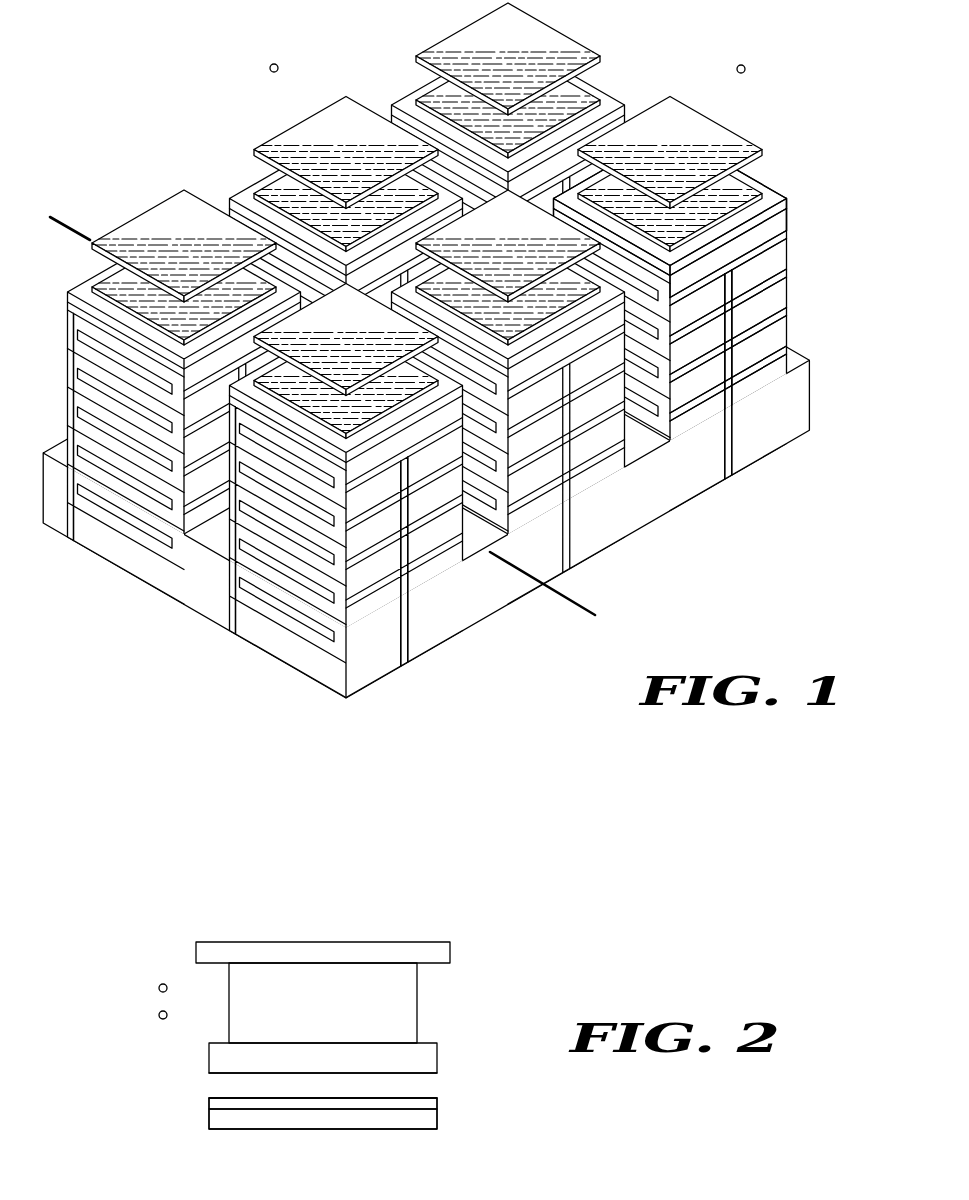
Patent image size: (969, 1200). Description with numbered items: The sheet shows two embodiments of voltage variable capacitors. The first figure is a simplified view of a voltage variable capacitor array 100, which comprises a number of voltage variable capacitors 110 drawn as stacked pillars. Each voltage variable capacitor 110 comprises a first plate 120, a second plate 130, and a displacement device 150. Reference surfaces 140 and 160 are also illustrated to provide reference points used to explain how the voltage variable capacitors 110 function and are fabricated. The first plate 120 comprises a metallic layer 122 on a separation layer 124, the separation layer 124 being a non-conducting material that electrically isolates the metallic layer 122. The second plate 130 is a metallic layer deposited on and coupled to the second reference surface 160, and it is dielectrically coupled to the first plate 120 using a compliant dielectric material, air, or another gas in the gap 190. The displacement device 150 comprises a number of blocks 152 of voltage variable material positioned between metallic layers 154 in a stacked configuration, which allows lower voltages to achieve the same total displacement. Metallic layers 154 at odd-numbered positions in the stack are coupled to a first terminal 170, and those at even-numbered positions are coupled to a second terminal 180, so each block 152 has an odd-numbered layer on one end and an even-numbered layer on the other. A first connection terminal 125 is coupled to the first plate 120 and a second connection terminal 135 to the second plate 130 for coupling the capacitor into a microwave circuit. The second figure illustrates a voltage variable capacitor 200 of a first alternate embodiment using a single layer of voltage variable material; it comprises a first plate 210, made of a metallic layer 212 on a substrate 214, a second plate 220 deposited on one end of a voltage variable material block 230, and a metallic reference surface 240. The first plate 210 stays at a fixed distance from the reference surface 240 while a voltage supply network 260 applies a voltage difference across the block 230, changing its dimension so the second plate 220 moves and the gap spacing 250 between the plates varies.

In FIG. 1, the voltage variable capacitor array 100 is at (451, 363).
In FIG. 1, the voltage variable capacitor 110 is at (121, 581).
In FIG. 1, the first plate 120 is at (833, 147).
In FIG. 1, the metallic layer 122 is at (787, 178).
In FIG. 1, the separation layer 124 is at (788, 208).
In FIG. 1, the first connection terminal 125 is at (262, 181).
In FIG. 1, the second plate 130 is at (488, 49).
In FIG. 1, the second connection terminal 135 is at (302, 124).
In FIG. 1, the reference surface 140 is at (586, 597).
In FIG. 1, the displacement device 150 is at (42, 283).
In FIG. 1, the blocks of voltage variable material 152 is at (789, 230).
In FIG. 1, the metallic layers 154 is at (789, 238).
In FIG. 1, the second reference surface 160 is at (71, 215).
In FIG. 1, the first terminal 170 is at (75, 506).
In FIG. 1, the second terminal 180 is at (407, 619).
In FIG. 1, the gap 190 is at (605, 75).
In FIG. 2, the voltage variable capacitor 200 is at (369, 1035).
In FIG. 2, the first plate 210 is at (453, 1114).
In FIG. 2, the metallic layer 212 is at (209, 1104).
In FIG. 2, the substrate 214 is at (209, 1121).
In FIG. 2, the second plate 220 is at (453, 1060).
In FIG. 2, the voltage variable material block 230 is at (417, 1003).
In FIG. 2, the reference surface 240 is at (450, 964).
In FIG. 2, the gap spacing 250 is at (448, 1088).
In FIG. 2, the voltage supply network 260 is at (196, 963).